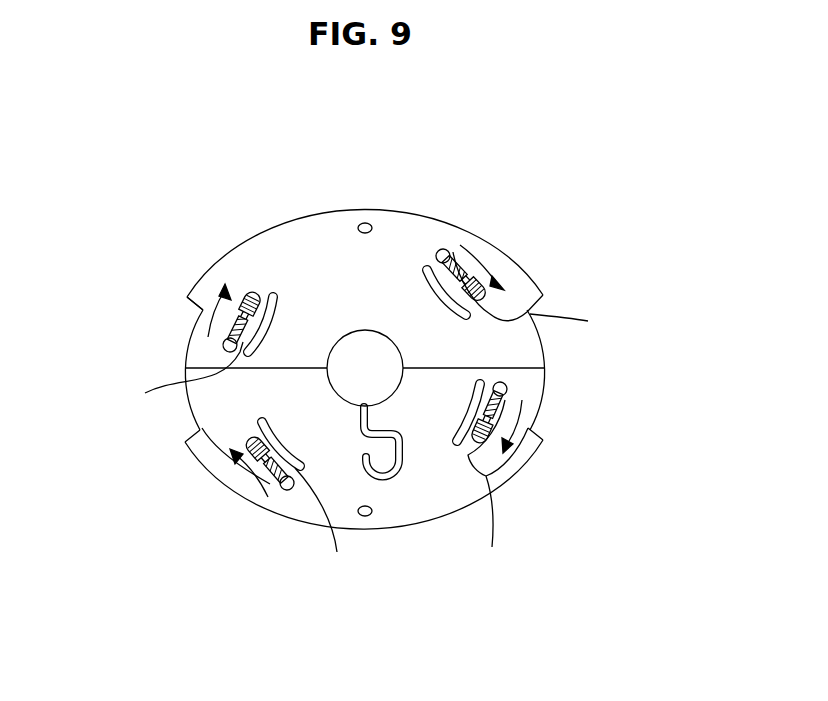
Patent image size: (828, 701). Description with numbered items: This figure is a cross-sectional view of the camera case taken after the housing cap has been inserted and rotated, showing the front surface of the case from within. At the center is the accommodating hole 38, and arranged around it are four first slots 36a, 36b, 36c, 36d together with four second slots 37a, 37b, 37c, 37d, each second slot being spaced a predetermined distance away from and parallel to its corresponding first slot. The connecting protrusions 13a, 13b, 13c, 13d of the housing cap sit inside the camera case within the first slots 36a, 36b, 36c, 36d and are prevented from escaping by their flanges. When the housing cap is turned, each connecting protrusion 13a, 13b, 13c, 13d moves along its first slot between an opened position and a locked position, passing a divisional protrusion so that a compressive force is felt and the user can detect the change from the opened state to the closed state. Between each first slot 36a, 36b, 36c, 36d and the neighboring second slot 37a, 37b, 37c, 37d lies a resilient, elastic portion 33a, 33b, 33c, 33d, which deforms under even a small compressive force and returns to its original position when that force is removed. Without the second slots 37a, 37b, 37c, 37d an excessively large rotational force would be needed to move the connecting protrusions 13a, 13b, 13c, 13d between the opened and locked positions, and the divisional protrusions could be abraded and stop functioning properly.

The connecting protrusion 13a is at (505, 400).
The connecting protrusion 13b is at (453, 252).
The connecting protrusion 13c is at (224, 346).
The connecting protrusion 13d is at (270, 484).
The resilient elastic portion 33a is at (490, 524).
The resilient elastic portion 33b is at (577, 322).
The resilient elastic portion 33c is at (173, 375).
The resilient elastic portion 33d is at (330, 524).
The first slot 36a is at (484, 458).
The first slot 36b is at (435, 250).
The first slot 36c is at (258, 284).
The first slot 36d is at (290, 486).
The second slot 37a is at (458, 442).
The second slot 37b is at (427, 270).
The second slot 37c is at (273, 296).
The second slot 37d is at (303, 466).
The accommodating hole 38 is at (360, 345).